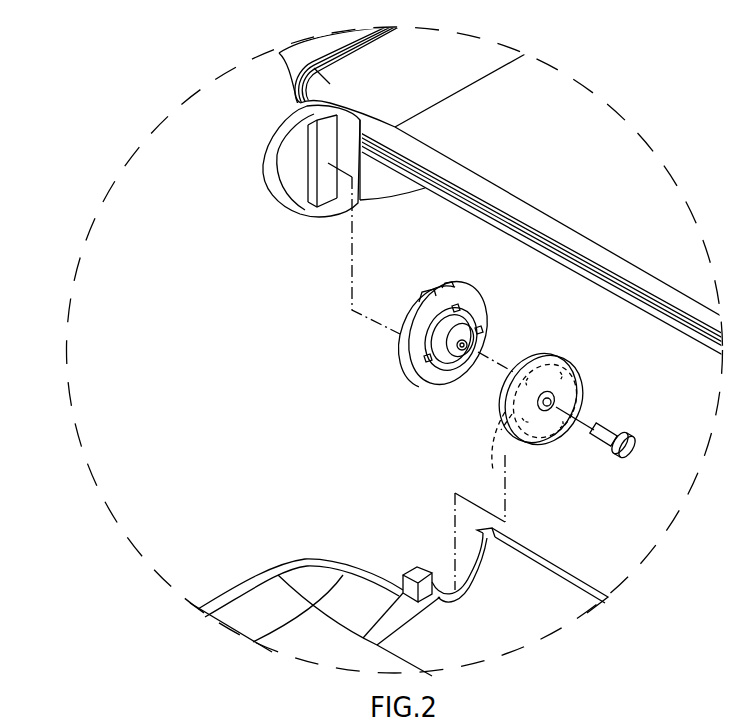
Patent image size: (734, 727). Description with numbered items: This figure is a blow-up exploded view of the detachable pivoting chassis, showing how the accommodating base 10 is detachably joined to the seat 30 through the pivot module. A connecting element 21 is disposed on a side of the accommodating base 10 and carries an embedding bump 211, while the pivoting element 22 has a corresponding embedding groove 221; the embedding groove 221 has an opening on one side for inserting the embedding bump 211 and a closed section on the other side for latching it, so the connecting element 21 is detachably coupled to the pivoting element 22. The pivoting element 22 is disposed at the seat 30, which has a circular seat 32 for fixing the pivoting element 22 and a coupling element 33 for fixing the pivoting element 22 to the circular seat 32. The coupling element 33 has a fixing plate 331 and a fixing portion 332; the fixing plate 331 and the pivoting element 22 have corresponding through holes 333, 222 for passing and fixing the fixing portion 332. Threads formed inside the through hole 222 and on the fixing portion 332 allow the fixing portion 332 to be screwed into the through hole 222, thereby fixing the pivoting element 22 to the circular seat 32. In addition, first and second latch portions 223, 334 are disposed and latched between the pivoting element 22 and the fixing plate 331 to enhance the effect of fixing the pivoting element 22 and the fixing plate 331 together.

The accommodating base 10 is at (279, 53).
The connecting element 21 is at (266, 206).
The embedding bump 211 is at (329, 192).
The pivoting element 22 is at (440, 337).
The embedding groove 221 is at (437, 293).
The through hole 222 is at (468, 346).
The first latch portion 223 is at (452, 370).
The seat 30 is at (307, 566).
The circular seat 32 is at (452, 587).
The coupling element 33 is at (578, 410).
The fixing plate 331 is at (560, 372).
The fixing portion 332 is at (608, 428).
The through hole 333 is at (544, 408).
The second latch portion 334 is at (487, 455).